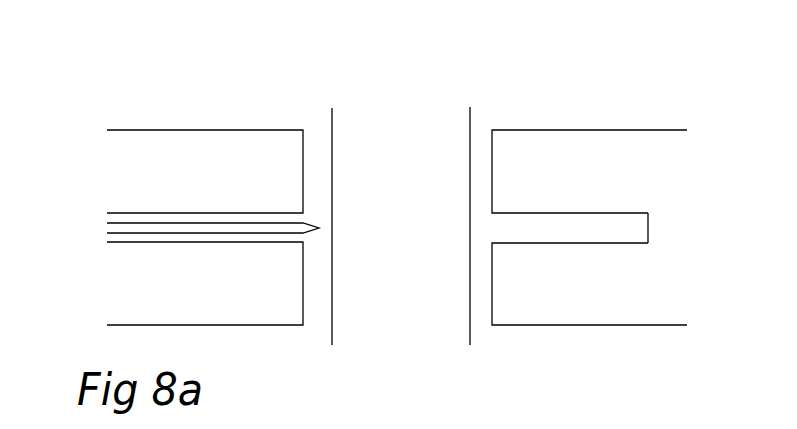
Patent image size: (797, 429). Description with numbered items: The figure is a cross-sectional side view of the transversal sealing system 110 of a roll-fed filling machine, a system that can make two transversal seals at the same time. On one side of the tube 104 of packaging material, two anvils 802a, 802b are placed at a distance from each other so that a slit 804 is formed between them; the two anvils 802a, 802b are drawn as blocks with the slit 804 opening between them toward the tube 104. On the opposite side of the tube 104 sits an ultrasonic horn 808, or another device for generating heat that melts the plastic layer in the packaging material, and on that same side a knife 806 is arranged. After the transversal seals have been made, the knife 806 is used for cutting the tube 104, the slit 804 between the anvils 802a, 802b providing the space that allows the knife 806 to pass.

The transversal sealing system 110 is at (125, 95).
The ultrasonic horn 808 is at (268, 141).
The knife 806 is at (191, 232).
The tube 104 is at (422, 198).
The anvil 802a is at (518, 141).
The anvil 802b is at (522, 313).
The slit 804 is at (626, 232).